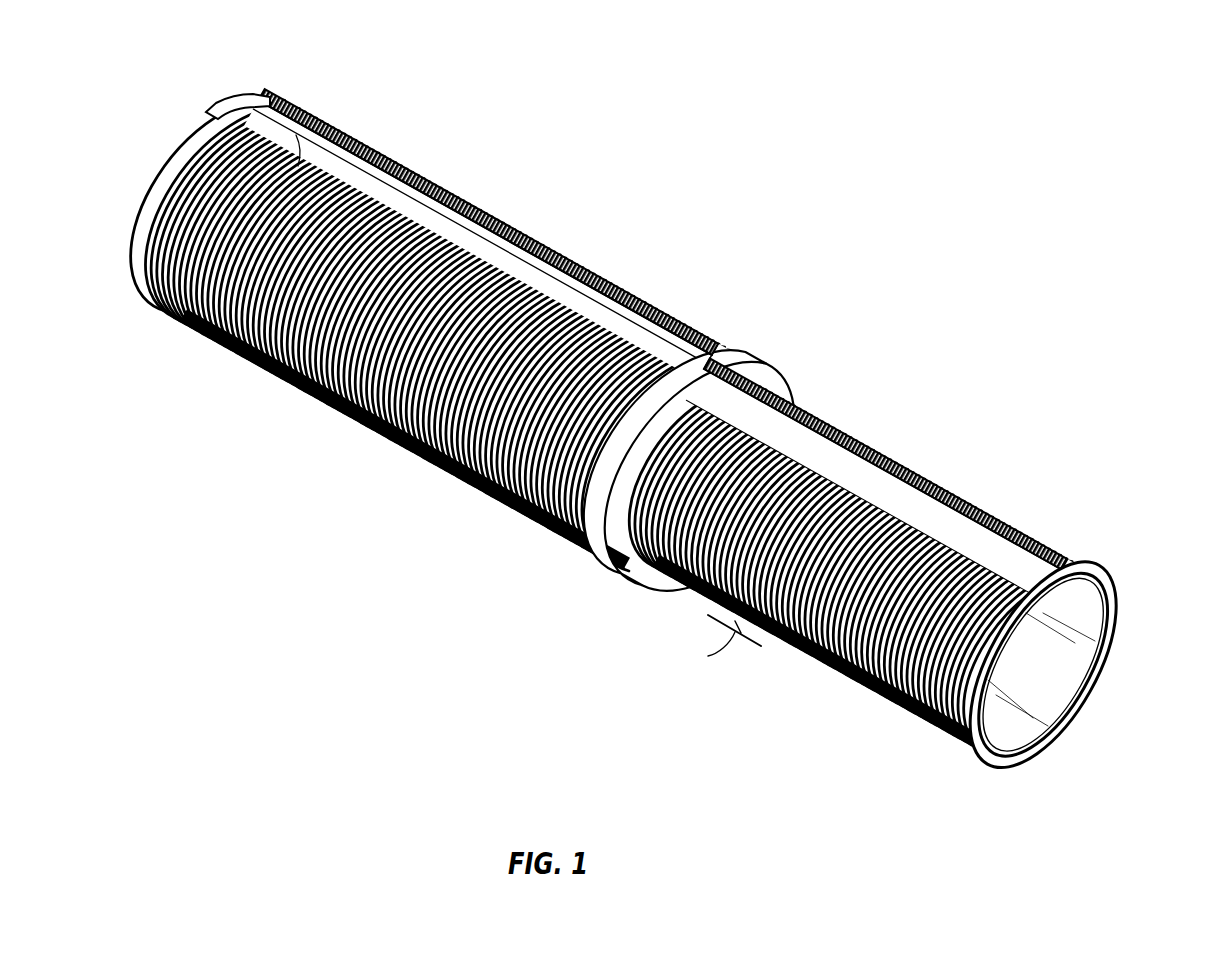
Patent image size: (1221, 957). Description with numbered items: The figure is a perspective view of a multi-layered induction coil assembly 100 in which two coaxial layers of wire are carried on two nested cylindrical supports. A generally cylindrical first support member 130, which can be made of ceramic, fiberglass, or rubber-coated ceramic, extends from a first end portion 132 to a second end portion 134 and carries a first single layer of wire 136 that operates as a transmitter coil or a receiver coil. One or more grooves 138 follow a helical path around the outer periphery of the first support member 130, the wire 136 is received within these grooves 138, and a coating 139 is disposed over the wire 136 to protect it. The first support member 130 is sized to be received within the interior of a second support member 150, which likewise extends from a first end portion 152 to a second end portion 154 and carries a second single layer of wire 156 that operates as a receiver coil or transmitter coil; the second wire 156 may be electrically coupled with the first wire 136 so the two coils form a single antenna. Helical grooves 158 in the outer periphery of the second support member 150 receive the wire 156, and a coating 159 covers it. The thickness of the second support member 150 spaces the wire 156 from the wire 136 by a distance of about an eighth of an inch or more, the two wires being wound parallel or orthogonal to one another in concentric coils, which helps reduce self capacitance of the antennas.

The coil assembly 100 is at (908, 146).
The first support member 130 is at (1090, 582).
The first end portion 132 is at (1048, 556).
The second end portion 134 is at (761, 381).
The first single layer of wire 136 is at (905, 463).
The grooves 138 is at (968, 498).
The coating 139 is at (838, 426).
The second support member 150 is at (217, 93).
The first end portion 152 is at (717, 350).
The second end portion 154 is at (248, 90).
The second single layer of wire 156 is at (485, 212).
The grooves 158 is at (422, 175).
The coating 159 is at (548, 246).